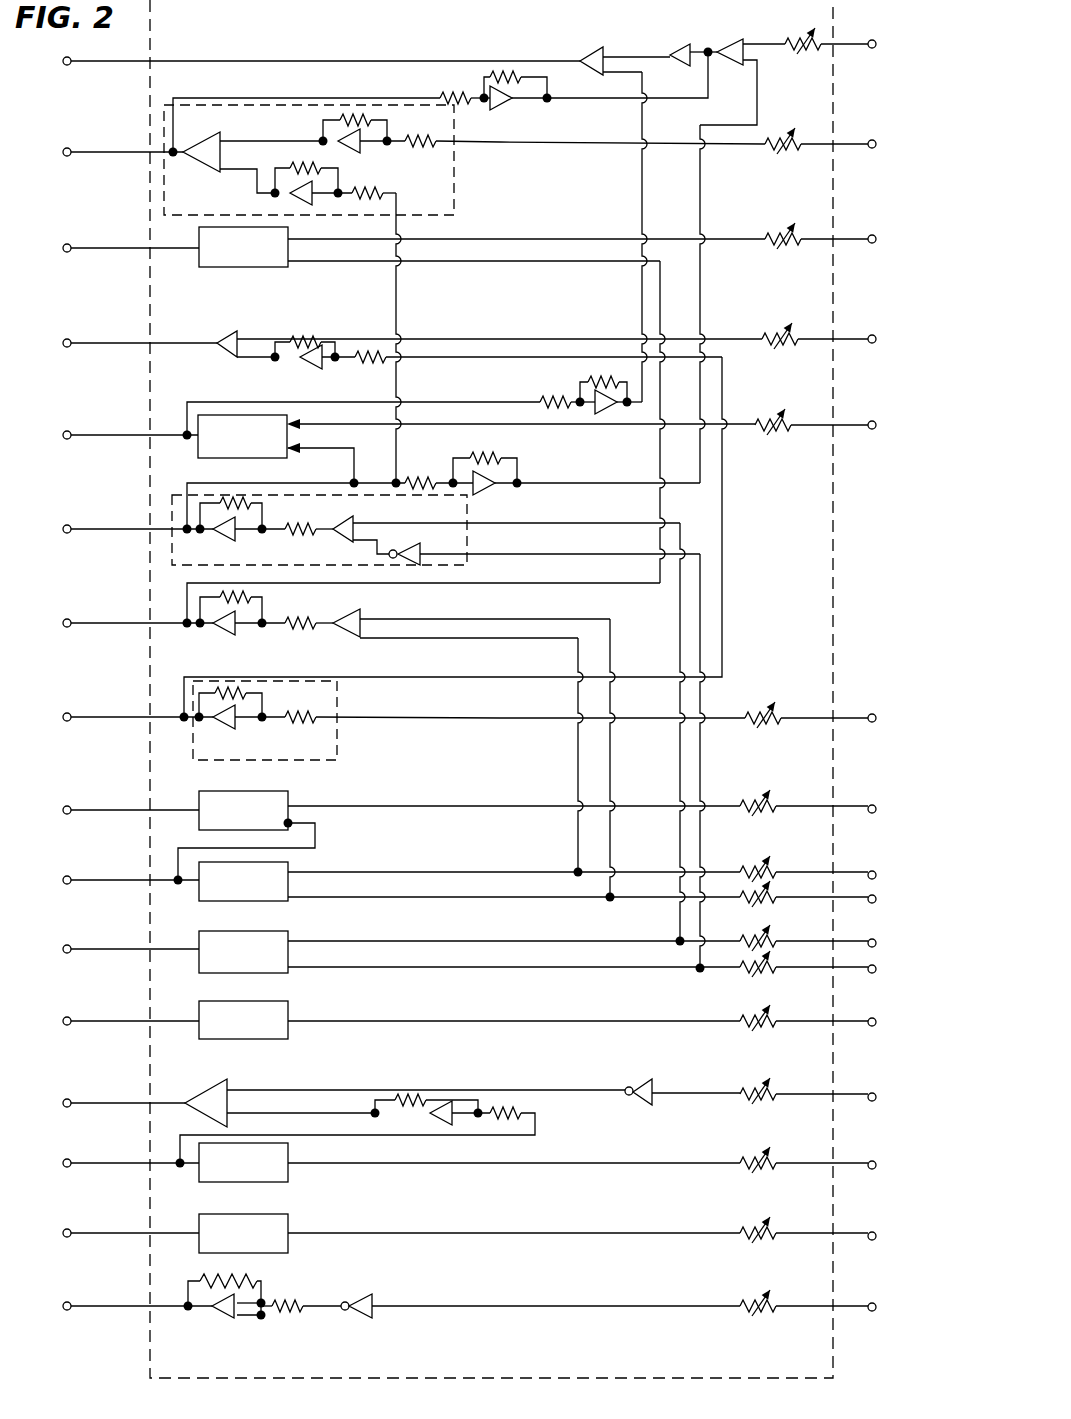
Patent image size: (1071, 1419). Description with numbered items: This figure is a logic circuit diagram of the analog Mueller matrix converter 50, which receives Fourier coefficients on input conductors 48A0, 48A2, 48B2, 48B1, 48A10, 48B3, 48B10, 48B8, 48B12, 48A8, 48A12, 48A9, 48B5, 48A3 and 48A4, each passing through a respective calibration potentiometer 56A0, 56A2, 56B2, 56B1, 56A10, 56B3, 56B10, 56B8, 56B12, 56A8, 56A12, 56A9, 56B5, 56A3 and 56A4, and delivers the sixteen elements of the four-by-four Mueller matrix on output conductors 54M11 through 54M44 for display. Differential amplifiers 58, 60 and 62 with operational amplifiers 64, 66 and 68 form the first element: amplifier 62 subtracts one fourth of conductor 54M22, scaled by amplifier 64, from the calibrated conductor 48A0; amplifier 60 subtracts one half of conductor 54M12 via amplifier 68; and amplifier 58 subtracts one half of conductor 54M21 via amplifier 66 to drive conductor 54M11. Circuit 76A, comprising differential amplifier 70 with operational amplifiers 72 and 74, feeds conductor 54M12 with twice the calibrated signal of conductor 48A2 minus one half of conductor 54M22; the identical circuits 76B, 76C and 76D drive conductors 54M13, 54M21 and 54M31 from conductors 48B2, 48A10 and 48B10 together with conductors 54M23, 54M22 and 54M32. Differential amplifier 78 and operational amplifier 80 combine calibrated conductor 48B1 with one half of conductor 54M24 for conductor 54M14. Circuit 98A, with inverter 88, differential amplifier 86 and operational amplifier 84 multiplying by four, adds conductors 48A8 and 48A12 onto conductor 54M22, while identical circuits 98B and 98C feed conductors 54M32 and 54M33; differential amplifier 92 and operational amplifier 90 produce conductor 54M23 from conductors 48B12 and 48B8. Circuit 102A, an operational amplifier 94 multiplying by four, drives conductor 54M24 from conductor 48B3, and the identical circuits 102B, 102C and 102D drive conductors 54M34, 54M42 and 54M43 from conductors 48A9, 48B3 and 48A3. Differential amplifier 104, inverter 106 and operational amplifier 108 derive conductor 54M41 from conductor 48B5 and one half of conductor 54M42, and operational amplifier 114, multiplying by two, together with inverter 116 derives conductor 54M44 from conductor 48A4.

The Mueller matrix converter 50 is at (178, 36).
The output conductor 54M11 is at (118, 61).
The output conductor 54M12 is at (118, 152).
The output conductor 54M13 is at (120, 248).
The output conductor 54M14 is at (120, 343).
The output conductor 54M21 is at (120, 435).
The output conductor 54M22 is at (120, 529).
The output conductor 54M23 is at (120, 623).
The output conductor 54M24 is at (120, 717).
The output conductor 54M31 is at (120, 810).
The output conductor 54M32 is at (120, 880).
The output conductor 54M33 is at (120, 949).
The output conductor 54M34 is at (120, 1021).
The output conductor 54M41 is at (120, 1103).
The output conductor 54M42 is at (120, 1163).
The output conductor 54M43 is at (120, 1233).
The output conductor 54M44 is at (120, 1306).
The differential operational amplifier 58 is at (588, 55).
The differential operational amplifier 60 is at (680, 48).
The differential operational amplifier 62 is at (740, 46).
The operational amplifier 64 is at (488, 492).
The operational amplifier 66 is at (612, 408).
The operational amplifier 68 is at (506, 104).
The differential amplifier 70 is at (186, 168).
The operational amplifier 72 is at (358, 148).
The operational amplifier 74 is at (305, 205).
The circuit 76A is at (430, 196).
The circuit 76B is at (252, 262).
The circuit 76C is at (222, 452).
The circuit 76D is at (273, 797).
The differential amplifier 78 is at (228, 352).
The operational amplifier 80 is at (312, 366).
The operational amplifier 84 is at (222, 540).
The differential amplifier 86 is at (344, 540).
The inverter 88 is at (420, 550).
The operational amplifier 90 is at (222, 634).
The differential amplifier 92 is at (350, 634).
The operational amplifier 94 is at (232, 730).
The circuit 98A is at (465, 562).
The circuit 98B is at (270, 893).
The circuit 98C is at (272, 963).
The circuit 102A is at (337, 700).
The circuit 102B is at (258, 1035).
The circuit 102C is at (262, 1173).
The circuit 102D is at (264, 1246).
The differential amplifier 104 is at (212, 1090).
The inverter 106 is at (640, 1106).
The operational amplifier 108 is at (470, 1108).
The operational amplifier 114 is at (258, 1322).
The inverter 116 is at (362, 1318).
The calibration potentiometer 56A0 is at (826, 72).
The calibration potentiometer 56A2 is at (778, 155).
The calibration potentiometer 56B2 is at (776, 250).
The calibration potentiometer 56B1 is at (768, 352).
The calibration potentiometer 56A10 is at (760, 436).
The calibration potentiometer 56B3 is at (766, 730).
The calibration potentiometer 56B10 is at (756, 818).
The calibration potentiometer 56B8 is at (764, 878).
The calibration potentiometer 56B12 is at (758, 906).
The calibration potentiometer 56A8 is at (764, 946).
The calibration potentiometer 56A12 is at (758, 976).
The calibration potentiometer 56A9 is at (758, 1030).
The calibration potentiometer 56B5 is at (758, 1104).
The calibration potentiometer 56A3 is at (758, 1243).
The calibration potentiometer 56A4 is at (758, 1316).
The input conductor 48A0 is at (870, 49).
The input conductor 48A2 is at (869, 149).
The input conductor 48B2 is at (869, 244).
The input conductor 48B1 is at (869, 344).
The input conductor 48A10 is at (869, 430).
The input conductor 48B3 is at (869, 723).
The input conductor 48B10 is at (869, 814).
The input conductor 48B8 is at (870, 880).
The input conductor 48B12 is at (870, 904).
The input conductor 48A8 is at (870, 948).
The input conductor 48A12 is at (869, 974).
The input conductor 48A9 is at (869, 1027).
The input conductor 48B5 is at (869, 1102).
The input conductor 48A3 is at (869, 1241).
The input conductor 48A4 is at (869, 1312).